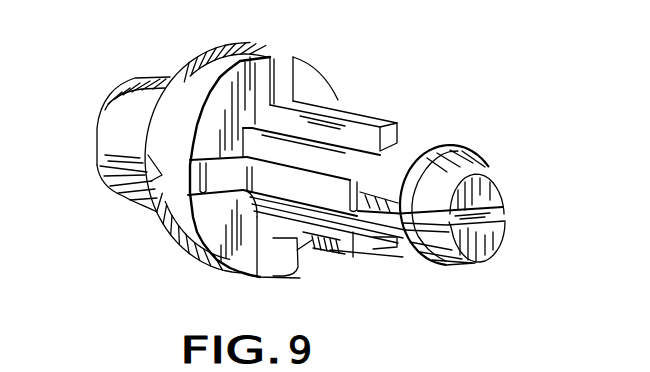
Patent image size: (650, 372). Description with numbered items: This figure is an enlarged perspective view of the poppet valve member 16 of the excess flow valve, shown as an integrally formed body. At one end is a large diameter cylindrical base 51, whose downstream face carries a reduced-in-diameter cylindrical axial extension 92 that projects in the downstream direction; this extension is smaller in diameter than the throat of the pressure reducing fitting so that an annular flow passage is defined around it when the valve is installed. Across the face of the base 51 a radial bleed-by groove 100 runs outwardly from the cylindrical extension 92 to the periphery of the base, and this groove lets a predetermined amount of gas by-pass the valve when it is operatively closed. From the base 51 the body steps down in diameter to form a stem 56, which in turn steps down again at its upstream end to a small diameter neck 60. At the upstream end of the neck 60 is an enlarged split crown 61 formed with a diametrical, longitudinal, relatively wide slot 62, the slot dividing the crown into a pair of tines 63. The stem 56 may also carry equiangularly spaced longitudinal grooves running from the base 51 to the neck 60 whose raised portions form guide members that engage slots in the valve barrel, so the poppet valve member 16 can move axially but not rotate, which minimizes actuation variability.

The poppet valve member 16 is at (158, 45).
The cylindrical base 51 is at (250, 42).
The cylindrical axial extension 92 is at (108, 130).
The radial bleed-by groove 100 is at (138, 172).
The stem 56 is at (356, 240).
The neck 60 is at (430, 152).
The slot 62 is at (493, 207).
The tines 63 is at (487, 178).
The split crown 61 is at (472, 264).